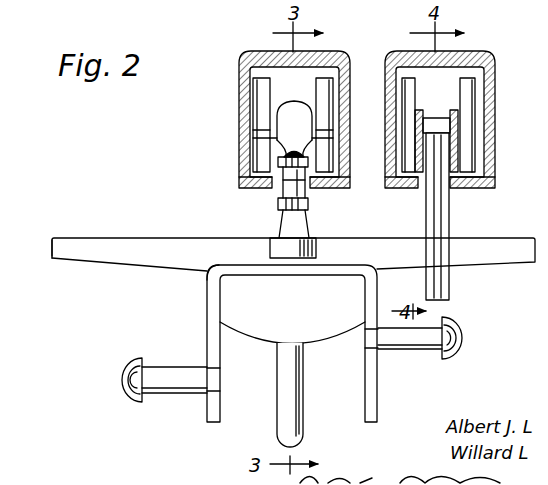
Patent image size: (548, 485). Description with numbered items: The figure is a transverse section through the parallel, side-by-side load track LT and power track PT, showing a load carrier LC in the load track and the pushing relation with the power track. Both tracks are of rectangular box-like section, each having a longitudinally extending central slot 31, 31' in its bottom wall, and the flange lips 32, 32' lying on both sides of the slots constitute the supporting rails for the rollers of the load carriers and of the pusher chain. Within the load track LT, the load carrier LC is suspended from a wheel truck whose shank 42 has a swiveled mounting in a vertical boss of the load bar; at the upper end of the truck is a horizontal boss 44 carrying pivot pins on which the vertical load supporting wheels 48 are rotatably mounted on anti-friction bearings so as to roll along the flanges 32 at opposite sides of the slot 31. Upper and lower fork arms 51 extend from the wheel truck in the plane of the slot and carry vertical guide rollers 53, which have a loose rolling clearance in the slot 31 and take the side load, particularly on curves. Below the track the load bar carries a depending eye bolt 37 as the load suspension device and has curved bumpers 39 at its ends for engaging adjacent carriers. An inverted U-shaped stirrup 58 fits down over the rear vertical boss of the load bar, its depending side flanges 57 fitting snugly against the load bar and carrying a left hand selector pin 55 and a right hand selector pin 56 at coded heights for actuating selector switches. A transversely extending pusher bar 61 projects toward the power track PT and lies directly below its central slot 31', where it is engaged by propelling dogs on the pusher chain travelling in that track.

The central slot 31 is at (266, 191).
The flange lips 32 is at (287, 180).
The central slot 31' is at (455, 205).
The flange lips 32' is at (458, 196).
The eye bolt 37 is at (292, 404).
The curved bumpers 39 is at (265, 333).
The shank 42 is at (298, 228).
The horizontal boss 44 is at (293, 104).
The load supporting wheels 48 is at (258, 86).
The fork arms 51 is at (308, 161).
The guide rollers 53 is at (288, 191).
The left hand selector pin 55 is at (122, 379).
The right hand selector pin 56 is at (464, 336).
The side flanges 57 is at (210, 303).
The inverted U-shaped stirrup 58 is at (228, 262).
The pusher bar 61 is at (60, 242).
The load track LT is at (240, 60).
The power track PT is at (492, 58).
The load carrier LC is at (184, 234).